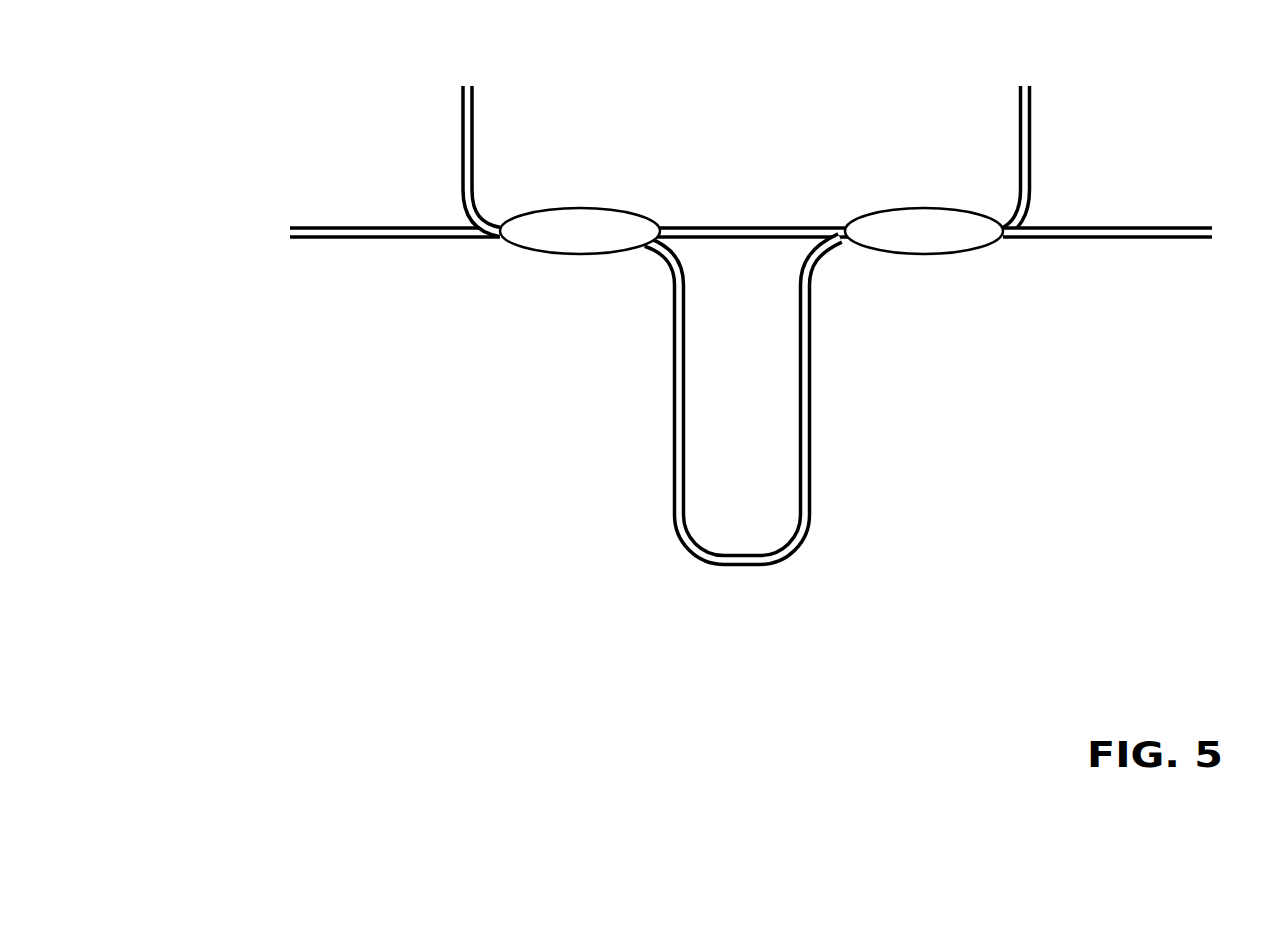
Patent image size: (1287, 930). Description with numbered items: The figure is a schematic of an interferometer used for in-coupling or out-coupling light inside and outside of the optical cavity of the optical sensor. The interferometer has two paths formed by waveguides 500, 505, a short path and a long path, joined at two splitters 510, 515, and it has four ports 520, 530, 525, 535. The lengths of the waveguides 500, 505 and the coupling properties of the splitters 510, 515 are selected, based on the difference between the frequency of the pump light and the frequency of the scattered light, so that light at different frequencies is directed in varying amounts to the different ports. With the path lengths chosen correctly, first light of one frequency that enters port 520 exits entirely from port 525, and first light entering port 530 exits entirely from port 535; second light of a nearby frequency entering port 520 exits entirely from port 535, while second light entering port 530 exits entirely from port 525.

The waveguide 500 is at (742, 222).
The waveguide 505 is at (678, 450).
The splitter 510 is at (582, 255).
The splitter 515 is at (923, 253).
The port 520 is at (467, 127).
The port 525 is at (1015, 127).
The port 530 is at (367, 202).
The port 535 is at (1117, 202).